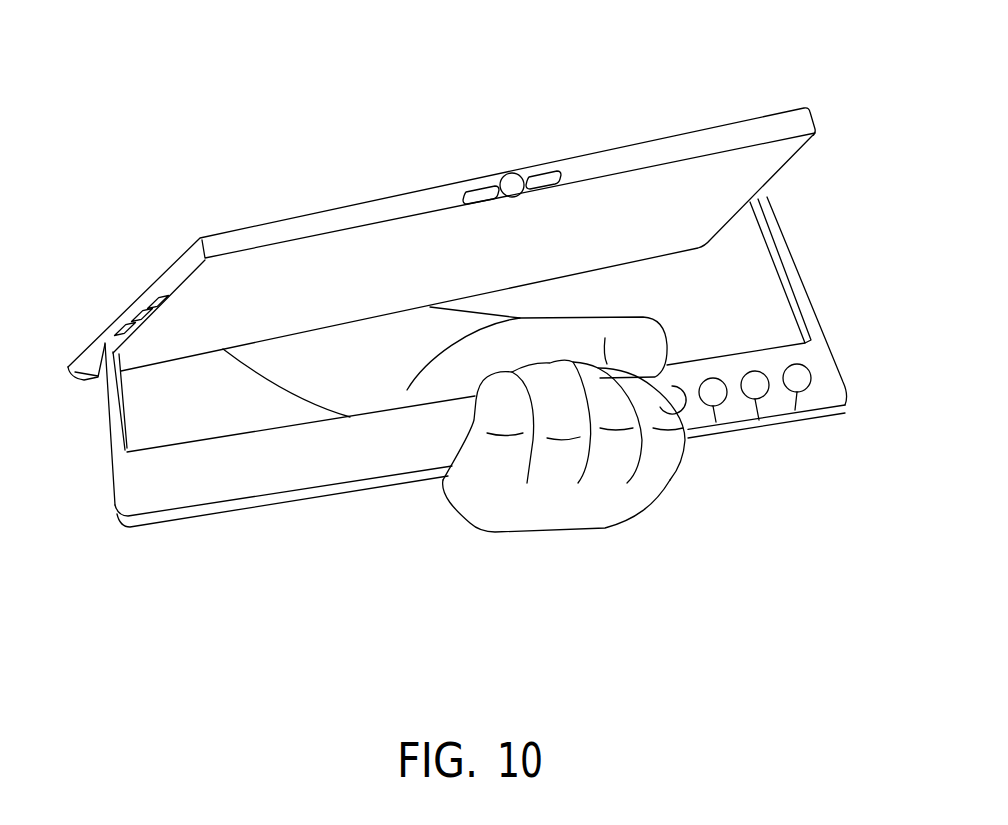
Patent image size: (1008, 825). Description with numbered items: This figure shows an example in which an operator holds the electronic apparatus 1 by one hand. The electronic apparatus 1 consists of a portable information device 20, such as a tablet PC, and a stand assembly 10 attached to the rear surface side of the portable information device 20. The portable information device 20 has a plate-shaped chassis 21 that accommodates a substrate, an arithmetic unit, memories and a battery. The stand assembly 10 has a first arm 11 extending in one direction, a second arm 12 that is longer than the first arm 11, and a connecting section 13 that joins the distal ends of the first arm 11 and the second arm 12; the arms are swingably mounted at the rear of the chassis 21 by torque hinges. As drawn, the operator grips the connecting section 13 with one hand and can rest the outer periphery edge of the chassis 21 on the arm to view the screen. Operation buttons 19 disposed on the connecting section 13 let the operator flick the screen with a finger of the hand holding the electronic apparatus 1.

The electronic apparatus 1 is at (725, 56).
The stand assembly 10 is at (327, 520).
The first arm 11 is at (112, 410).
The second arm 12 is at (792, 268).
The connecting section 13 is at (260, 490).
The operation buttons 19 is at (792, 426).
The portable information device 20 is at (829, 98).
The chassis 21 is at (662, 148).